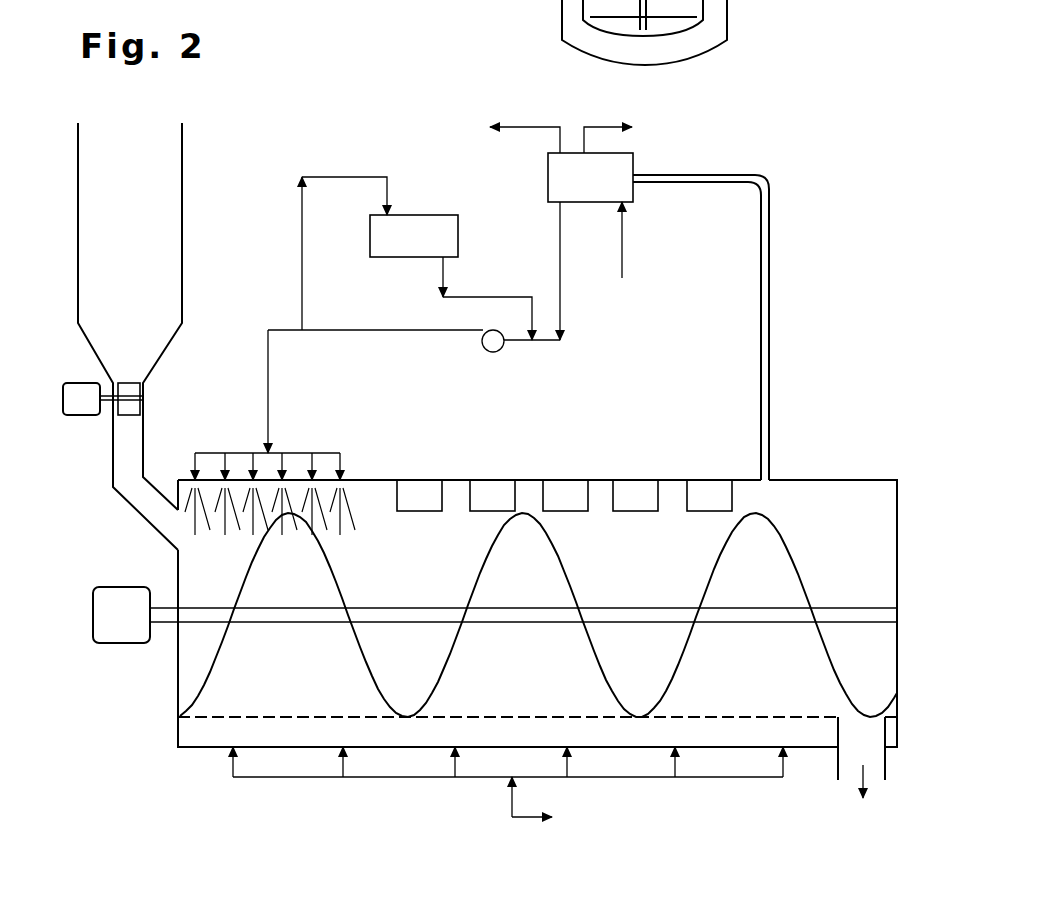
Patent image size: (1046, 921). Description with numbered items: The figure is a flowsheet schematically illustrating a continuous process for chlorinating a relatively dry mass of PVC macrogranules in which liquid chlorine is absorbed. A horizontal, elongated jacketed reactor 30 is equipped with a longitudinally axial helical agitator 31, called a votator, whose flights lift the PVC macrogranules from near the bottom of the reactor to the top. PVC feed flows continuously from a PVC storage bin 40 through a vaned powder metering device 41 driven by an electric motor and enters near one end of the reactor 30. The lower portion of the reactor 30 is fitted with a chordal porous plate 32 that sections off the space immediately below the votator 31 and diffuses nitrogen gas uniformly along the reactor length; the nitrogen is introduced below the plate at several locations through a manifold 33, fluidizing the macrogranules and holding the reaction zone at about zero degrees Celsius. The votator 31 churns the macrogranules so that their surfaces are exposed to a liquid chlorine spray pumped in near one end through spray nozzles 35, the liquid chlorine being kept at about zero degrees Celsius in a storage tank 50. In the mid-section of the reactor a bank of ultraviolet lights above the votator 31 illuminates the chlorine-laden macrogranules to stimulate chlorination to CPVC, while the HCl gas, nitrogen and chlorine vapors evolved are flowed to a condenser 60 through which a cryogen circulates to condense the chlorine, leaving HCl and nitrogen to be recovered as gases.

The jacketed reactor 30 is at (870, 470).
The helical agitator 31 is at (797, 560).
The chordal porous plate 32 is at (497, 717).
The manifold 33 is at (400, 777).
The spray nozzles 35 is at (237, 476).
The PVC storage bin 40 is at (187, 192).
The vaned powder metering device 41 is at (152, 405).
The storage tank 50 is at (432, 213).
The condenser 60 is at (640, 192).